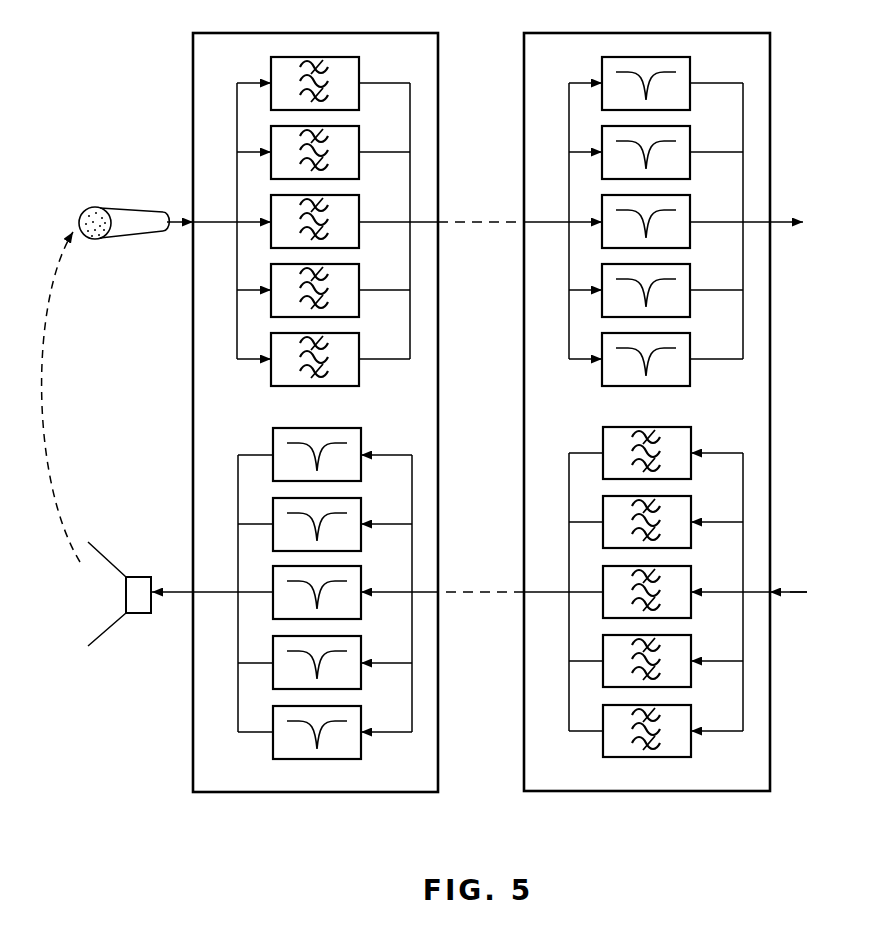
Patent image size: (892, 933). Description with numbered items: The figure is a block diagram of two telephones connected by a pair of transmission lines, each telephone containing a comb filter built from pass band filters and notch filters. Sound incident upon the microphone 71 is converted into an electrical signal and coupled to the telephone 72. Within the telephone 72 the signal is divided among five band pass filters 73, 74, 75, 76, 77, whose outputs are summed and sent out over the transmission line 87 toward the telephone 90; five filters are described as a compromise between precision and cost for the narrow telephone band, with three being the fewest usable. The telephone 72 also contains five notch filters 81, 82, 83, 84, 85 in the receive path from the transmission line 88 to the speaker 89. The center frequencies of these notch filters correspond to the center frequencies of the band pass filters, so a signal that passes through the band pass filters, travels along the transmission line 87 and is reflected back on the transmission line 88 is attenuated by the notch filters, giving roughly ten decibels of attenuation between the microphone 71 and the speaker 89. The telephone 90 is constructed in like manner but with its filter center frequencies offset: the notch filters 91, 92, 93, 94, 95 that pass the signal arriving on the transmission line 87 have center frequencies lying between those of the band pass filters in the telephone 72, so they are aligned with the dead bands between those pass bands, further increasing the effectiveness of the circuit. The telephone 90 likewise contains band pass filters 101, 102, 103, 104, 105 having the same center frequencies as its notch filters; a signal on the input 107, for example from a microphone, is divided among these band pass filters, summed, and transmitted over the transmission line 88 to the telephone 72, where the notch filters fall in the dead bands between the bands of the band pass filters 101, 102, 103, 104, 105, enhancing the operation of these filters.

The microphone 71 is at (115, 205).
The telephone 72 is at (281, 33).
The band pass filter 73 is at (360, 73).
The band pass filter 74 is at (360, 142).
The band pass filter 75 is at (360, 211).
The band pass filter 76 is at (360, 280).
The band pass filter 77 is at (360, 349).
The notch filter 81 is at (362, 440).
The notch filter 82 is at (362, 510).
The notch filter 83 is at (362, 578).
The notch filter 84 is at (362, 648).
The notch filter 85 is at (362, 718).
The transmission line 87 is at (485, 220).
The transmission line 88 is at (485, 590).
The speaker 89 is at (138, 617).
The telephone 90 is at (733, 33).
The notch filter 91 is at (670, 83).
The notch filter 92 is at (670, 152).
The notch filter 93 is at (670, 221).
The notch filter 94 is at (670, 290).
The notch filter 95 is at (670, 359).
The band pass filter 101 is at (692, 438).
The band pass filter 102 is at (692, 507).
The band pass filter 103 is at (692, 577).
The band pass filter 104 is at (692, 646).
The band pass filter 105 is at (692, 716).
The input 107 is at (793, 588).